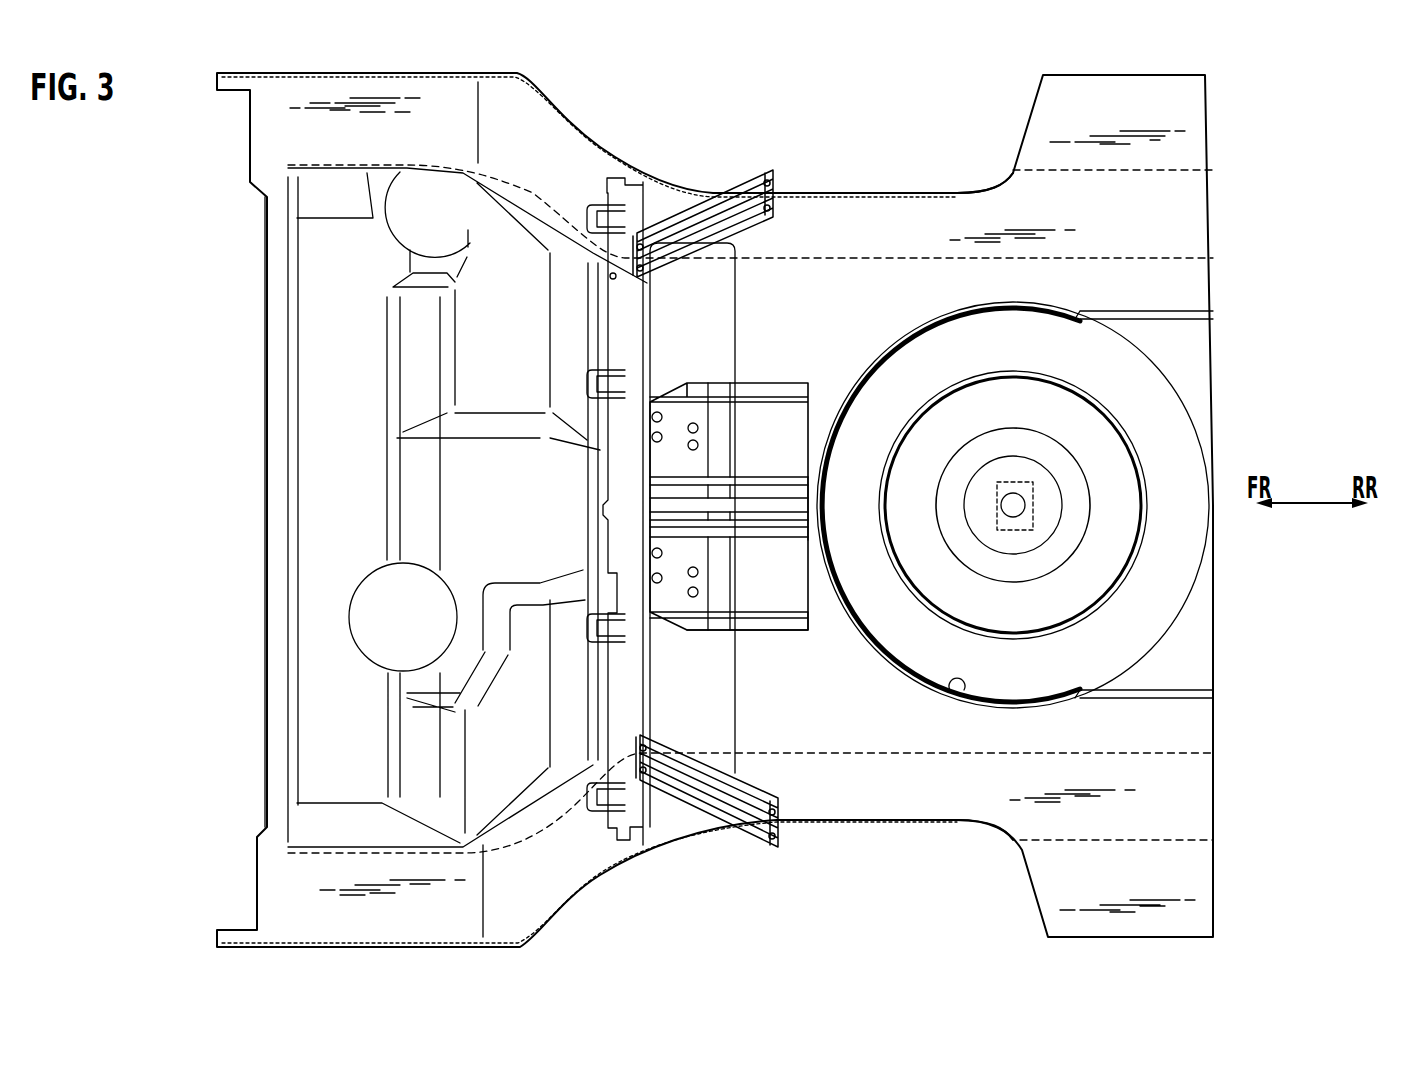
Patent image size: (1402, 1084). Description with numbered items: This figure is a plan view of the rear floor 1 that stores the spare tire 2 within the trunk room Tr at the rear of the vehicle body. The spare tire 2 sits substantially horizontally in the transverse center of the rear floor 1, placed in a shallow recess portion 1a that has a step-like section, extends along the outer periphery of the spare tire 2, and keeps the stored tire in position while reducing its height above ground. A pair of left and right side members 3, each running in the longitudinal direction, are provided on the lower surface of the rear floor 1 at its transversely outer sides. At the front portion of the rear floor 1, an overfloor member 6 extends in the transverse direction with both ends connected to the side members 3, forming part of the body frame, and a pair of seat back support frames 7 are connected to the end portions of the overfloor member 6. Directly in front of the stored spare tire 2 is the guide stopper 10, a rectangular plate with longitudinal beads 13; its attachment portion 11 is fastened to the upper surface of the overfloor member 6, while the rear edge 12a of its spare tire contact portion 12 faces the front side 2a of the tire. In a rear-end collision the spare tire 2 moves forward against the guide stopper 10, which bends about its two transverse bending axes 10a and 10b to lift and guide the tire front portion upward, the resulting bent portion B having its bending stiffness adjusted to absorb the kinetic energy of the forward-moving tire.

The rear floor 1 is at (715, 510).
The recess portion 1a is at (958, 742).
The spare tire 2 is at (1069, 481).
The front side 2a is at (1007, 505).
The side member 3 is at (960, 510).
The overfloor member 6 is at (758, 558).
The seat back support frame 7 is at (705, 506).
The guide stopper 10 is at (782, 413).
The bending axis 10a is at (684, 472).
The bending axis 10b is at (756, 453).
The attachment portion 11 is at (608, 511).
The spare tire contact portion 12 is at (800, 613).
The rear edge 12a is at (852, 530).
The bead 13 is at (729, 474).
The bent portion B is at (723, 550).
The trunk room Tr is at (855, 685).